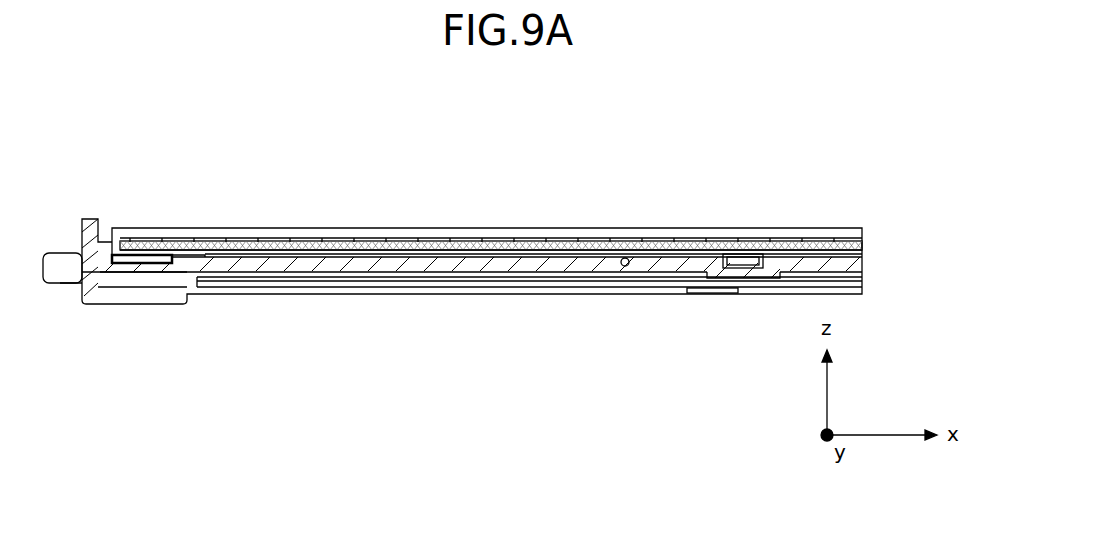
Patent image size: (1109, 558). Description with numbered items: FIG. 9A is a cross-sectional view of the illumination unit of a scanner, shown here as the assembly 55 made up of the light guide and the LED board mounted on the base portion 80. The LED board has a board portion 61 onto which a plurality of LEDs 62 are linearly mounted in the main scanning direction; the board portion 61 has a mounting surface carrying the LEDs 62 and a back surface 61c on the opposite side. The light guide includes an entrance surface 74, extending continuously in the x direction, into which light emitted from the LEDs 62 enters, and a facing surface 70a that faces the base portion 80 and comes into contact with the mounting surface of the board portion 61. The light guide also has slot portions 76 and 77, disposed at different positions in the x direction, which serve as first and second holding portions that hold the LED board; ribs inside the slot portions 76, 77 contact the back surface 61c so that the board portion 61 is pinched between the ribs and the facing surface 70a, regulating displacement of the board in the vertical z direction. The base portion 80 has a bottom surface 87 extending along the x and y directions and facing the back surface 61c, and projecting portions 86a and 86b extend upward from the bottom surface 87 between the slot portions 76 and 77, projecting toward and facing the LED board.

The display device 55 is at (233, 217).
The LED 62 is at (377, 238).
The back surface 61c is at (430, 248).
The facing surface 70a is at (505, 242).
The board portion 61 is at (686, 240).
The entrance surface 74 is at (842, 238).
The slot portion 76 is at (143, 264).
The base portion 80 is at (270, 265).
The projecting portion 86a is at (318, 270).
The projecting portion 86b is at (533, 270).
The bottom surface 87 is at (625, 266).
The slot portion 77 is at (745, 268).